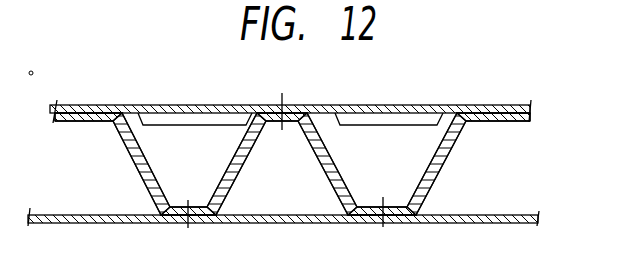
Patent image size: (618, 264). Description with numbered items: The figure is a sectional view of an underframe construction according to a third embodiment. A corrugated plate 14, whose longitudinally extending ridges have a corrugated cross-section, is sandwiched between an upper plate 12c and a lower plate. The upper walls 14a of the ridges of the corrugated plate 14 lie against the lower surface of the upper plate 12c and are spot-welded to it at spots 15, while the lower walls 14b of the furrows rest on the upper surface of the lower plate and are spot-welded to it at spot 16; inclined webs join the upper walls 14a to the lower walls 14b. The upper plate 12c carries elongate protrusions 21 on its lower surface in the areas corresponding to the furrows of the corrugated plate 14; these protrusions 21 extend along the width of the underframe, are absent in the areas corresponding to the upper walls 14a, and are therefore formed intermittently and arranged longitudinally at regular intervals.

The upper plate 12c is at (296, 105).
The corrugated plate 14 is at (442, 167).
The upper walls 14a is at (288, 122).
The lower walls 14b is at (182, 207).
The spots 15 is at (280, 102).
The spot 16 is at (187, 229).
The elongate protrusions 21 is at (408, 117).